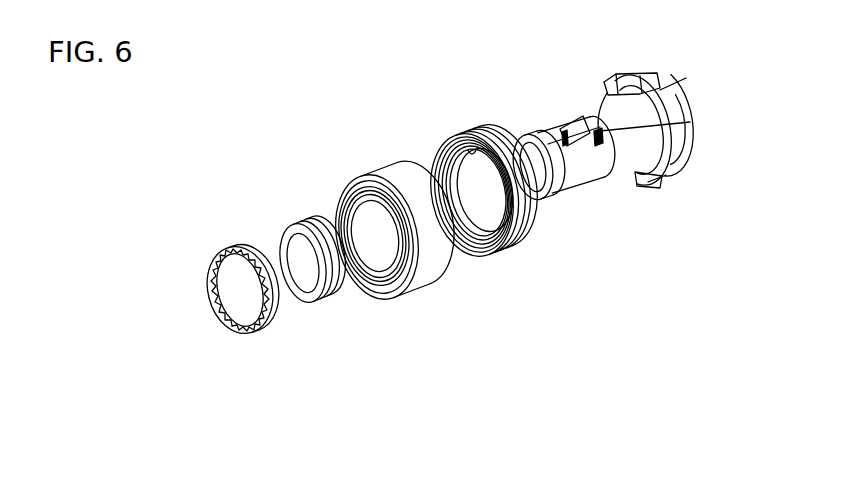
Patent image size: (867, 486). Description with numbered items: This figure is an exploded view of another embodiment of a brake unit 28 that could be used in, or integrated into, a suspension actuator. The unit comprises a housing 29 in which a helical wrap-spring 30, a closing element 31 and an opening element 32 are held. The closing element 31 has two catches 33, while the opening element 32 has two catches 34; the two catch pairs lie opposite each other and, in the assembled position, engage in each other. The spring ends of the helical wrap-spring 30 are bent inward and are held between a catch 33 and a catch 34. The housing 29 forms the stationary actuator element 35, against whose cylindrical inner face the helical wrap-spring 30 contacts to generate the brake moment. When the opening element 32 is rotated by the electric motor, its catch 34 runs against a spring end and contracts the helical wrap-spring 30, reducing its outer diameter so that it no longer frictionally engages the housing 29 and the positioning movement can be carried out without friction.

The brake unit 28 is at (510, 320).
The housing 29 is at (418, 304).
The helical wrap-spring 30 is at (518, 246).
The closing element 31 is at (588, 174).
The opening element 32 is at (698, 123).
The catch 33 is at (577, 117).
The catch 34 is at (607, 90).
The stationary actuator element 35 is at (385, 168).